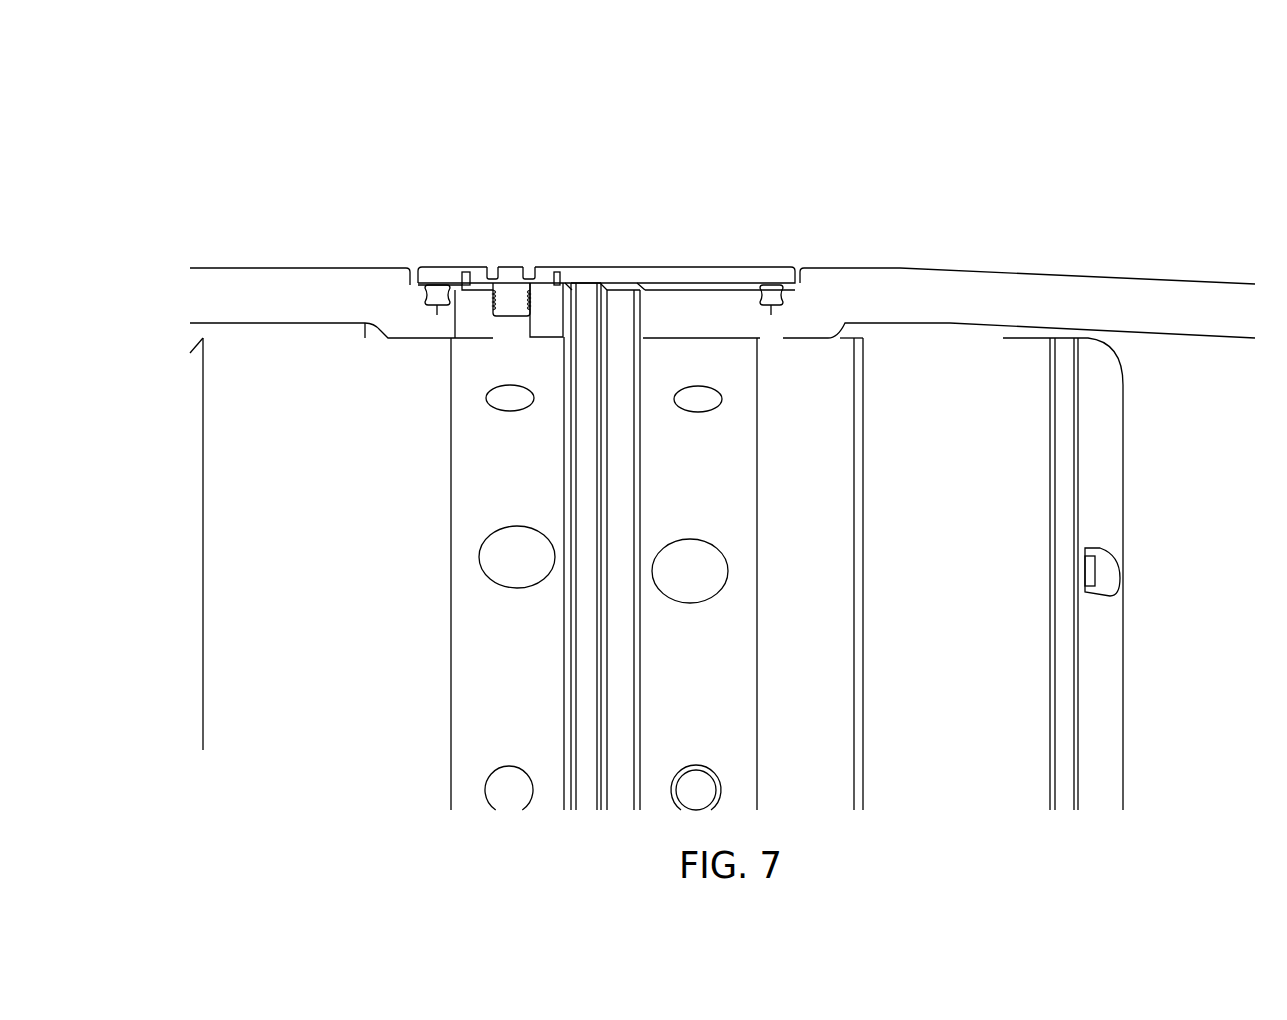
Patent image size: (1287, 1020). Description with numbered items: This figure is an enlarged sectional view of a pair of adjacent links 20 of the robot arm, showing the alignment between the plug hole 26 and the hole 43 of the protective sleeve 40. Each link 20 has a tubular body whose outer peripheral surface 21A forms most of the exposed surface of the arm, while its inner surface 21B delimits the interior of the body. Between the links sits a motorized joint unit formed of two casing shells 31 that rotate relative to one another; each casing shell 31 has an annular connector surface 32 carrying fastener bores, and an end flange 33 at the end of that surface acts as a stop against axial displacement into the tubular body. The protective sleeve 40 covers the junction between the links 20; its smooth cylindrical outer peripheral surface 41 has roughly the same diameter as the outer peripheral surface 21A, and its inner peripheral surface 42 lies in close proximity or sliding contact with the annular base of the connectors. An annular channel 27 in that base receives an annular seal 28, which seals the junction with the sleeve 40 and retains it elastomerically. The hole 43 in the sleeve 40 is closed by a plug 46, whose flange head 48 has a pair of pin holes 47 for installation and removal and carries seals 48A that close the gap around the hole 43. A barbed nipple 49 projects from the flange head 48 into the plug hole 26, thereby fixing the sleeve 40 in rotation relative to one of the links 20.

The link 20 is at (370, 150).
The outer peripheral surface 21A is at (280, 268).
The inner surface 21B is at (280, 323).
The plug hole 26 is at (540, 318).
The annular channel 27 is at (446, 306).
The annular seal 28 is at (430, 290).
The casing shell 31 is at (358, 600).
The annular connector surface 32 is at (531, 500).
The end flange 33 is at (588, 310).
The protective sleeve 40 is at (705, 240).
The outer peripheral surface 41 is at (720, 268).
The inner peripheral surface 42 is at (707, 285).
The hole 43 is at (560, 288).
The plug 46 is at (518, 220).
The pin hole 47 is at (490, 267).
The flange head 48 is at (556, 268).
The seal 48A is at (456, 268).
The nipple 49 is at (510, 302).